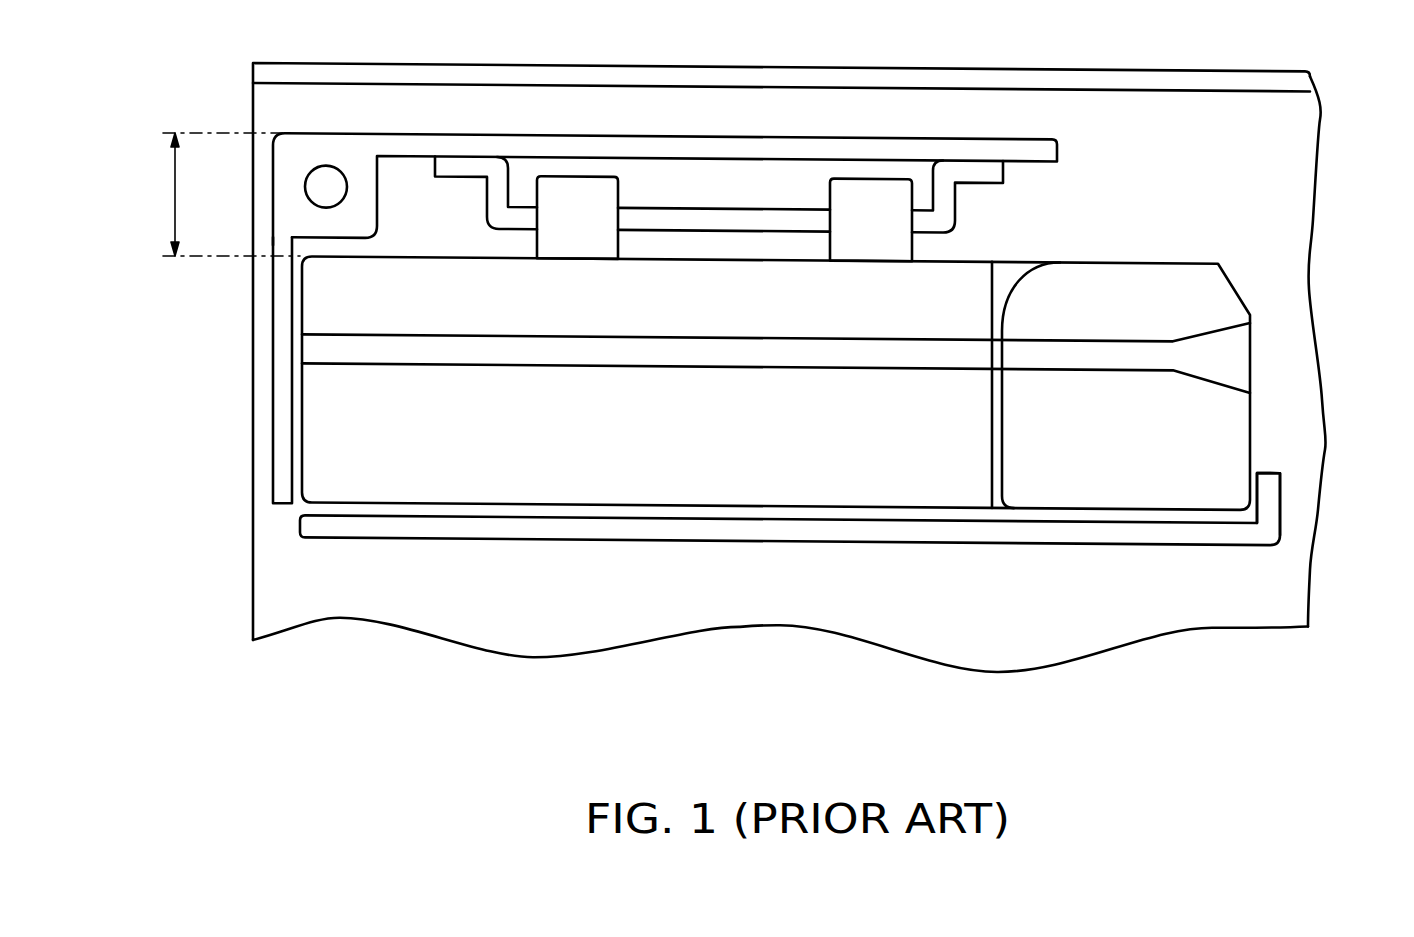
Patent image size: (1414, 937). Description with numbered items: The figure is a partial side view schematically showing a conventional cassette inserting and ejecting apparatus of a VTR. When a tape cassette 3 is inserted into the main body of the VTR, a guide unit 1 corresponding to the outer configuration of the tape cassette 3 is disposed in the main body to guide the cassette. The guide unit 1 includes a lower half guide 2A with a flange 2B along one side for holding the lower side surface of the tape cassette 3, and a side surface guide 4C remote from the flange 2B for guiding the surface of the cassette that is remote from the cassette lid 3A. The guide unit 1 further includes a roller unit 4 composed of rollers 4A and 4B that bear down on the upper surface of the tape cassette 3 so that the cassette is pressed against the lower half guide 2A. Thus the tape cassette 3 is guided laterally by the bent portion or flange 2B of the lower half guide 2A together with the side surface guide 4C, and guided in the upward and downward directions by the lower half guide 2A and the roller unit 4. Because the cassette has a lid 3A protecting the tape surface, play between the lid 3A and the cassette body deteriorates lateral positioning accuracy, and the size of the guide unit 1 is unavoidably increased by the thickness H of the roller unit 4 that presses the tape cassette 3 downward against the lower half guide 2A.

The guide unit 1 is at (1193, 609).
The lower half guide 2A is at (757, 520).
The flange 2B is at (1272, 503).
The tape cassette 3 is at (1278, 348).
The cassette lid 3A is at (1228, 437).
The roller unit 4 is at (1052, 193).
The roller 4A is at (573, 198).
The roller 4B is at (873, 197).
The side surface guide 4C is at (282, 413).
The thickness of the roller unit H is at (172, 185).